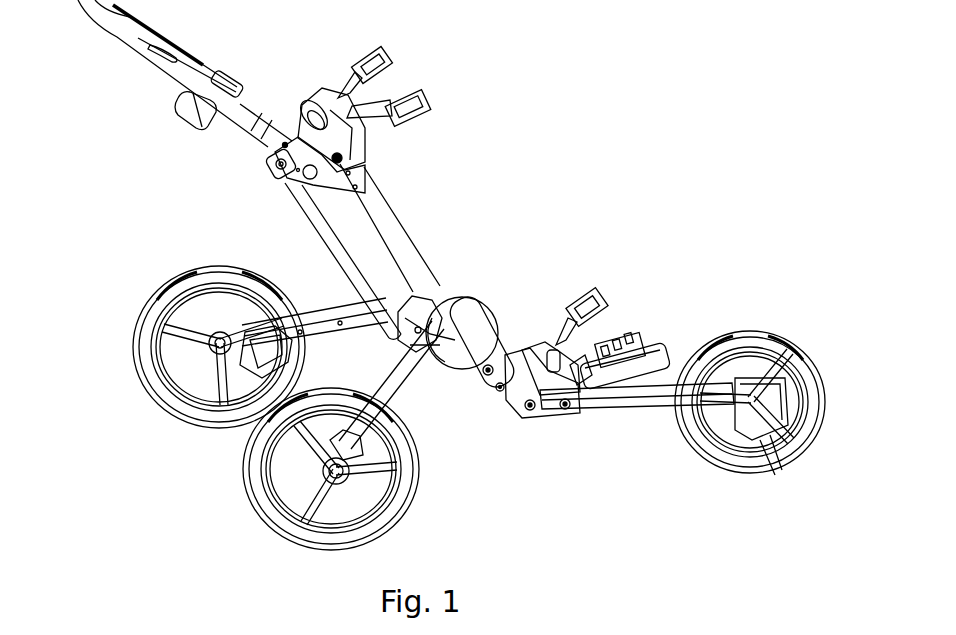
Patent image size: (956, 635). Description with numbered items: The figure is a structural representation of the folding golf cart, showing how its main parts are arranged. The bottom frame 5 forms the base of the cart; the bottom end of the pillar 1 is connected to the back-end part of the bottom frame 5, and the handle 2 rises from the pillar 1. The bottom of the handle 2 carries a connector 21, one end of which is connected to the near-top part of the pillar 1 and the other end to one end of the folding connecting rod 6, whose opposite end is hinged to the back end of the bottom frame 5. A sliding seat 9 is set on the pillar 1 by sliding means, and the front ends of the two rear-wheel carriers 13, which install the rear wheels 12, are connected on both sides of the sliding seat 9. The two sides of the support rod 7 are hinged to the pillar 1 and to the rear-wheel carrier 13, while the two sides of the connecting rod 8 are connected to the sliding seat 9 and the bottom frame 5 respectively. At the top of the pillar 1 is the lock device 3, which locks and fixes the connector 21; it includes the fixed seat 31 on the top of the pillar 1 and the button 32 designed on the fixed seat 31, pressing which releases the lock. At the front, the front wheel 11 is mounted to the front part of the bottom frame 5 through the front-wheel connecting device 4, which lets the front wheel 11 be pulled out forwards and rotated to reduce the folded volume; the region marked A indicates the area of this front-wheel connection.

The pillar 1 is at (407, 253).
The handle 2 is at (180, 68).
The lock device 3 is at (367, 88).
The front-wheel connecting device 4 is at (752, 390).
The bottom frame 5 is at (608, 402).
The folding connecting rod 6 is at (343, 255).
The support rod 7 is at (422, 362).
The connecting rod 8 is at (502, 348).
The sliding seat 9 is at (430, 318).
The front wheel 11 is at (743, 338).
The rear wheel 12 is at (253, 494).
The rear-wheel carrier 13 is at (400, 393).
The connector 21 is at (293, 135).
The fixed seat 31 is at (343, 130).
The button 32 is at (311, 112).
The detail region A is at (485, 288).